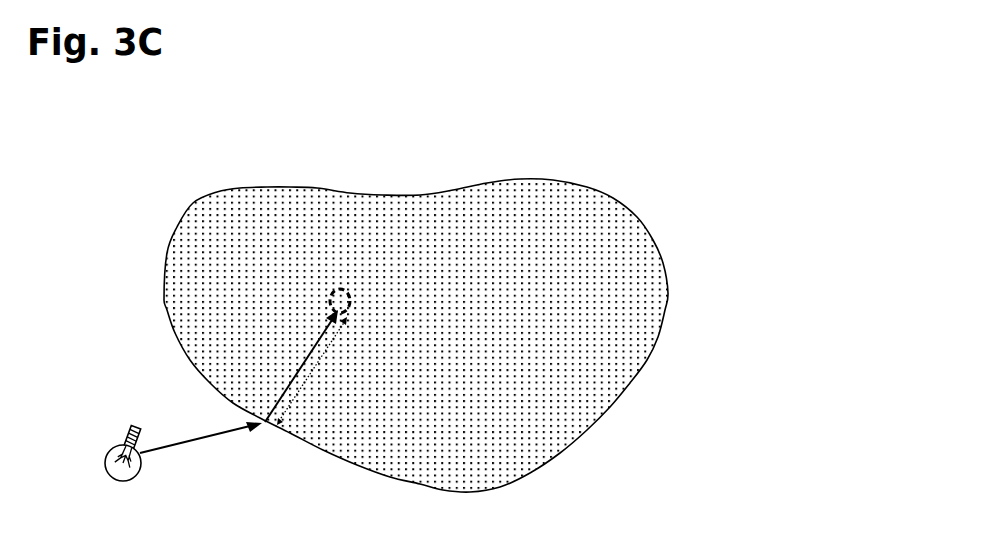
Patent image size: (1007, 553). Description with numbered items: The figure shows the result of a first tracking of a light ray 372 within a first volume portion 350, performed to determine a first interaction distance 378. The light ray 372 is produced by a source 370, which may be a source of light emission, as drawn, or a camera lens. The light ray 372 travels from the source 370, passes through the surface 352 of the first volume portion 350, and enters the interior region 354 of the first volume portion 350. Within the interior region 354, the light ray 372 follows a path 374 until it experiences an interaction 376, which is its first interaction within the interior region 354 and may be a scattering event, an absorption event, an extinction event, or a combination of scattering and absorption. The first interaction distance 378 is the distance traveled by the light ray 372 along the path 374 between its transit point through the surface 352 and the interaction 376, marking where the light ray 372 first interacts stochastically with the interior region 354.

The first volume portion 350 is at (434, 312).
The surface 352 is at (292, 437).
The interior region 354 is at (559, 230).
The source 370 is at (107, 453).
The light ray 372 is at (207, 437).
The path 374 is at (285, 390).
The interaction 376 is at (352, 300).
The first interaction distance 378 is at (318, 368).